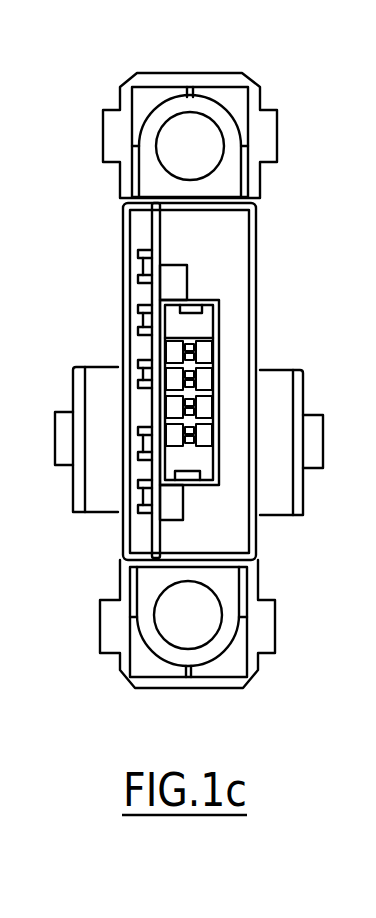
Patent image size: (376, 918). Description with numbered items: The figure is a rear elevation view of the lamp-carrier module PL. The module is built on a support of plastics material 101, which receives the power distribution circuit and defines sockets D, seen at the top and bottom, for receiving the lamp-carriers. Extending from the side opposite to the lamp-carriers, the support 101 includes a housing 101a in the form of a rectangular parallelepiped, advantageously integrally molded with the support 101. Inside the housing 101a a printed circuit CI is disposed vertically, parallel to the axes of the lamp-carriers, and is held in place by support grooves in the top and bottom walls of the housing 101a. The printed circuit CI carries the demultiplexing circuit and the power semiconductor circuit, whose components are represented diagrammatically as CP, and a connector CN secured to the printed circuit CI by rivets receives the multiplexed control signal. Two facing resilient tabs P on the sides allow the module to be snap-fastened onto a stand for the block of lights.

The socket D is at (168, 82).
The support of plastics material 101 is at (117, 144).
The housing 101a is at (122, 285).
The printed circuit CI is at (163, 232).
The connector CN is at (200, 329).
The circuit components CP is at (136, 368).
The resilient tab P is at (98, 493).
The lamp-carrier module PL is at (275, 581).